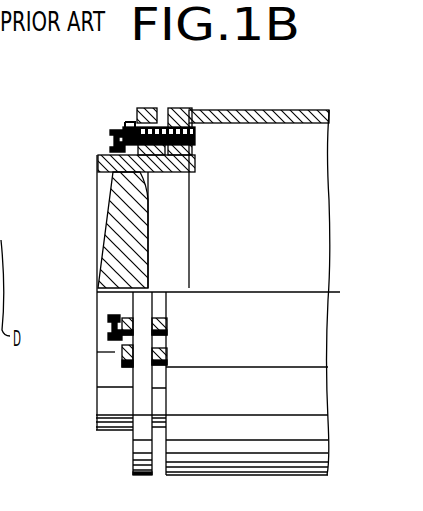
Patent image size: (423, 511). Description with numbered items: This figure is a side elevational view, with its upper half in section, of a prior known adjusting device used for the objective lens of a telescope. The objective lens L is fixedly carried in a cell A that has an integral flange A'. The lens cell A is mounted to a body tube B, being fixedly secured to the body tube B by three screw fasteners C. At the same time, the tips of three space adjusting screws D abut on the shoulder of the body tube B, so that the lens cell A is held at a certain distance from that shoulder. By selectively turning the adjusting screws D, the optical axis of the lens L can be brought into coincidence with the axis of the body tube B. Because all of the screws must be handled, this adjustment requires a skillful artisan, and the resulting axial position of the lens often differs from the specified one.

The cell A is at (129, 307).
The integral flange A' is at (150, 93).
The body tube B is at (178, 108).
The screw fastener C is at (127, 123).
The space adjusting screw D is at (112, 134).
The objective lens L is at (110, 241).